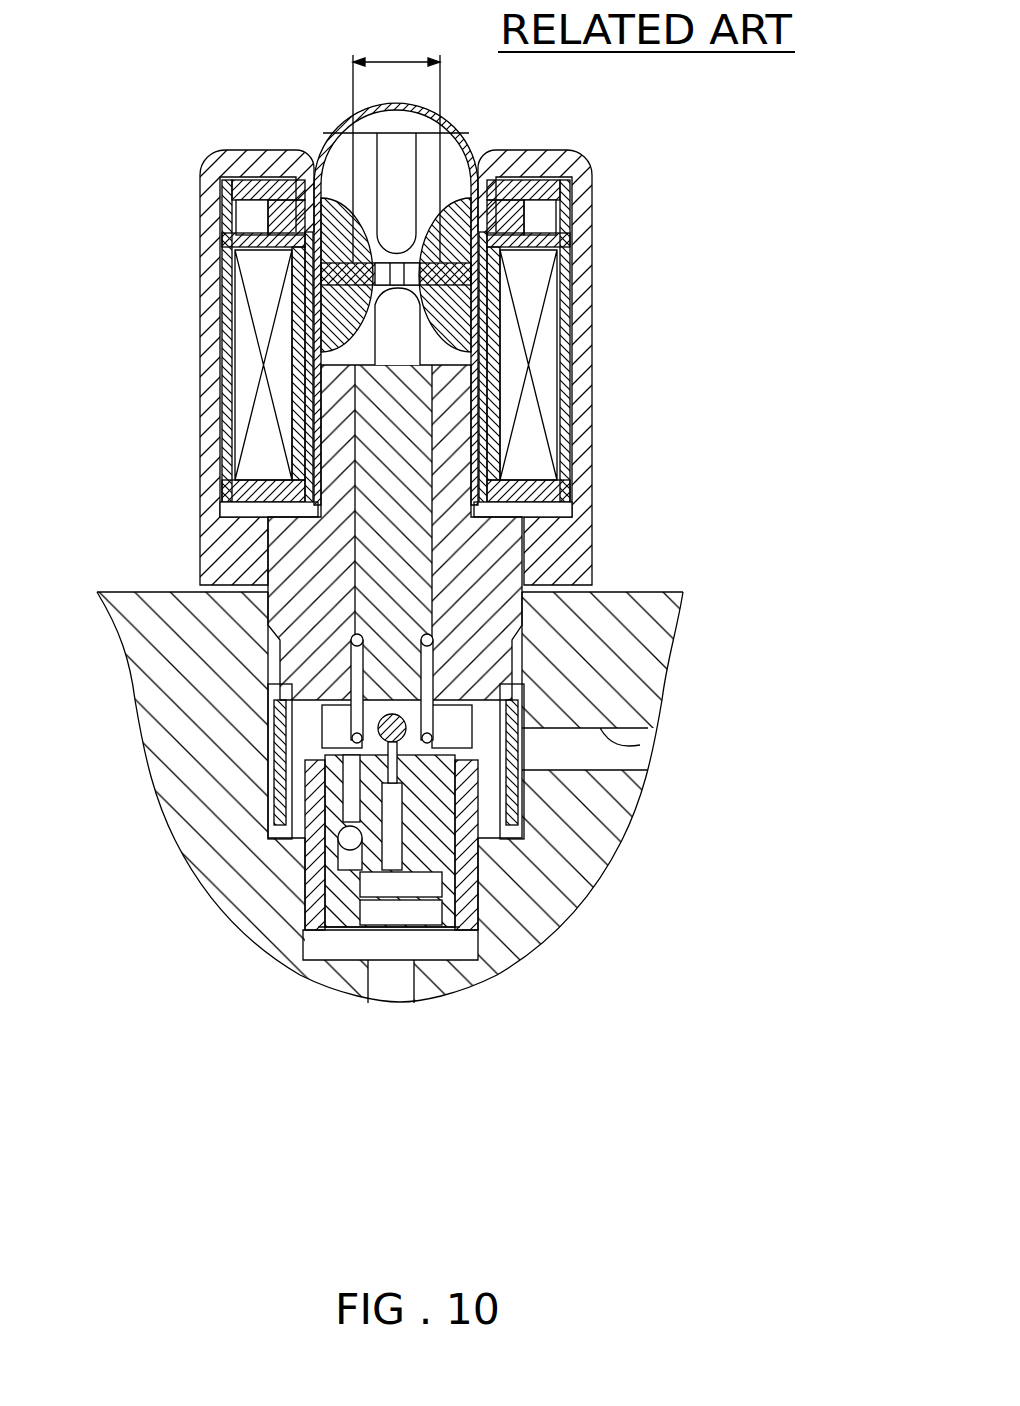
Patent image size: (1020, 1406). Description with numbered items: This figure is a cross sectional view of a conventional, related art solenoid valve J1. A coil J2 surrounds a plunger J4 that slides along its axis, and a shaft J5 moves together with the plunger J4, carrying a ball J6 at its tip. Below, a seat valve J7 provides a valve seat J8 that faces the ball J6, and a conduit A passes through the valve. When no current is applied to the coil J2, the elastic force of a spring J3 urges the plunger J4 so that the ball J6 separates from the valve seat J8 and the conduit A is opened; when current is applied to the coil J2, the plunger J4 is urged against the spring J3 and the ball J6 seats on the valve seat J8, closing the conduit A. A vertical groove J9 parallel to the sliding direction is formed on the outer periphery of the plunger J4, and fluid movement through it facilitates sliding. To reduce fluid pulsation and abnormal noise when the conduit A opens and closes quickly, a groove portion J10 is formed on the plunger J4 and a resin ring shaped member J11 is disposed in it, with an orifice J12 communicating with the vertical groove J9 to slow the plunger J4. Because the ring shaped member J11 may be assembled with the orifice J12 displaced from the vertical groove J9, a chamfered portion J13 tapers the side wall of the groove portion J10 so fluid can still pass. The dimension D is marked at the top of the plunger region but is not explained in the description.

The solenoid valve J1 is at (220, 138).
The coil J2 is at (540, 342).
The spring J3 is at (513, 710).
The plunger J4 is at (412, 140).
The shaft J5 is at (493, 468).
The ball J6 is at (455, 785).
The seat valve J7 is at (440, 856).
The valve seat J8 is at (335, 770).
The vertical groove J9 is at (397, 172).
The groove portion J10 is at (500, 272).
The ring shaped member J11 is at (455, 350).
The orifice J12 is at (440, 366).
The chamfered portion J13 is at (470, 305).
The conduit A is at (605, 733).
The diameter D is at (396, 145).